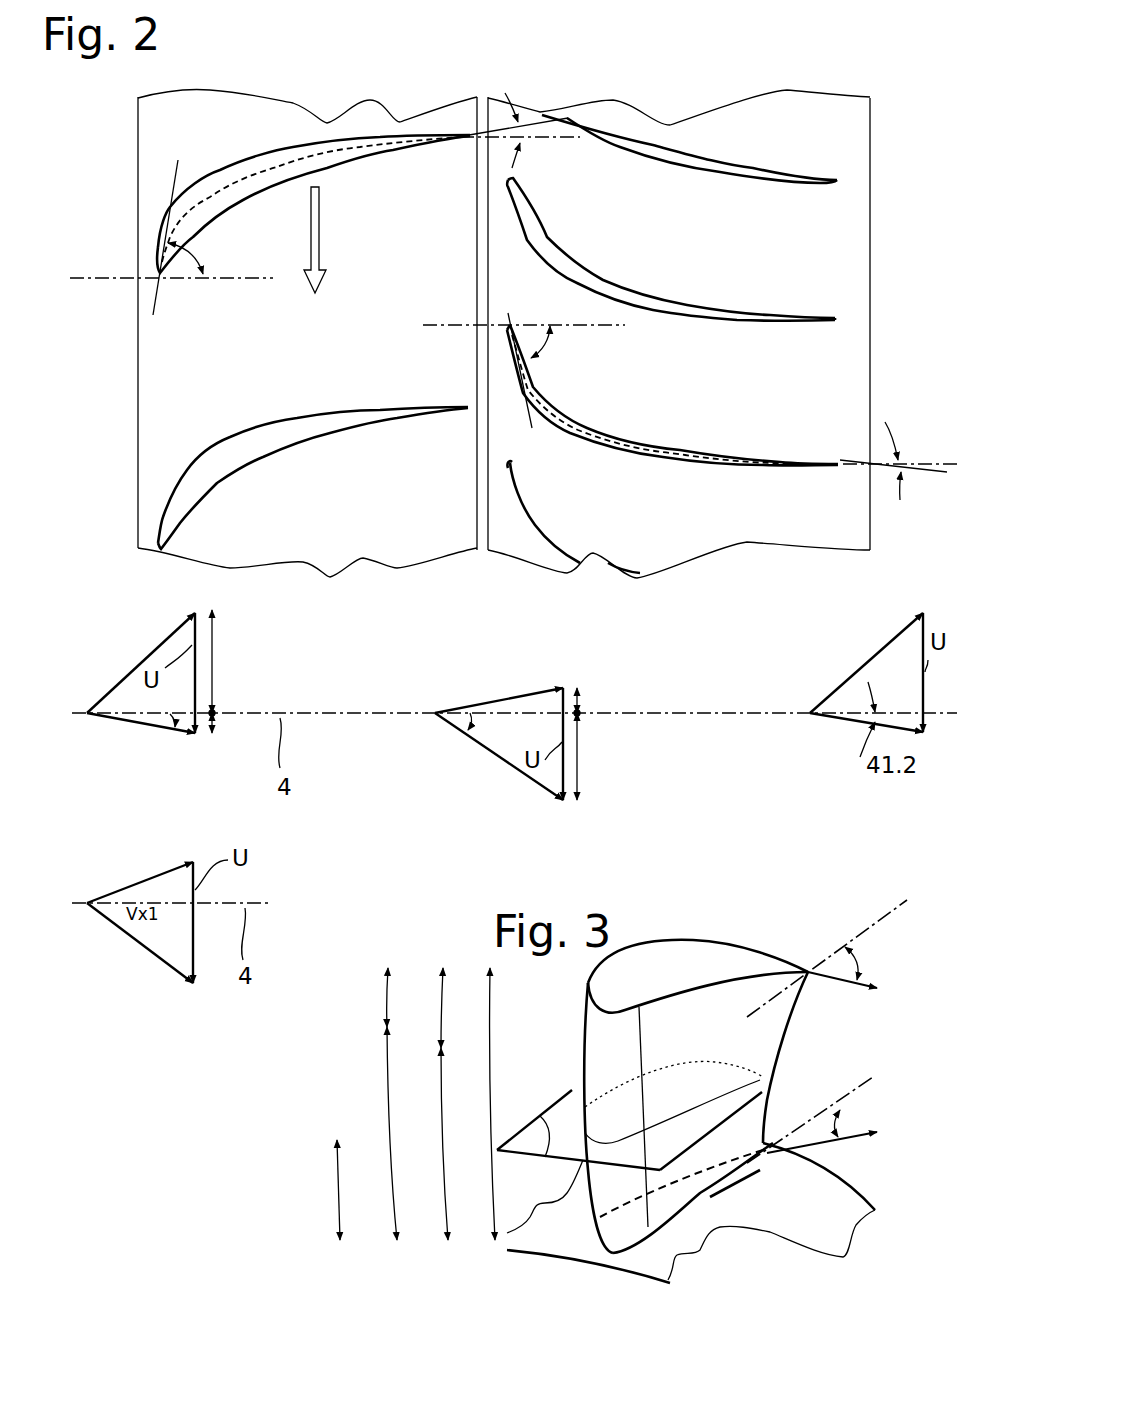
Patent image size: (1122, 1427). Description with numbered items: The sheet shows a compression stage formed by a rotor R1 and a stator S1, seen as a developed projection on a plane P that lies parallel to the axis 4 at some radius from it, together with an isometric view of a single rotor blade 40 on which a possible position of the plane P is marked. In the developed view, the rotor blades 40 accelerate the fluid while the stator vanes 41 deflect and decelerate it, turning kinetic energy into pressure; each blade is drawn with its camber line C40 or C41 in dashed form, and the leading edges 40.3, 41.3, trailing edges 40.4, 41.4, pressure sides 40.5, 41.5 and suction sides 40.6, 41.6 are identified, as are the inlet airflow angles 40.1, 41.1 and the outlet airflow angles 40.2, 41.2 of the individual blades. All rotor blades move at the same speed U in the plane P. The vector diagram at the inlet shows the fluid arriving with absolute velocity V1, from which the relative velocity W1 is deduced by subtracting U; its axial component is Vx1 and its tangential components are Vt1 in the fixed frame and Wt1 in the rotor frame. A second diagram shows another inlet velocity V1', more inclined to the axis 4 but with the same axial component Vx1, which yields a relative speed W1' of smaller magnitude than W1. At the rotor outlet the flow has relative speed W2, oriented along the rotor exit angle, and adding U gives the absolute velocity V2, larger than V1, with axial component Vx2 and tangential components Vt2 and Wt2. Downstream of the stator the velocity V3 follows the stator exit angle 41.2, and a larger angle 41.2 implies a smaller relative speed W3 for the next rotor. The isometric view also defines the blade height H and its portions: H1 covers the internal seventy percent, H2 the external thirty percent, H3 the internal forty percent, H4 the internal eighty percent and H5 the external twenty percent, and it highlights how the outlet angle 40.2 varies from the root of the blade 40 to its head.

In FIG. 2, the axis 4 is at (95, 282).
In FIG. 2, the rotor blade 40 is at (222, 162).
In FIG. 3, the rotor blade 40 is at (563, 1050).
In FIG. 2, the inlet airflow angle of rotor blade 40.1 is at (203, 237).
In FIG. 2, the outlet airflow angle of rotor blade 40.2 is at (510, 114).
In FIG. 3, the outlet airflow angle of rotor blade 40.2 is at (829, 1031).
In FIG. 2, the leading edge of rotor blade 40.3 is at (172, 547).
In FIG. 3, the leading edge of rotor blade 40.3 is at (587, 1218).
In FIG. 2, the trailing edge of rotor blade 40.4 is at (465, 412).
In FIG. 3, the trailing edge of rotor blade 40.4 is at (780, 1057).
In FIG. 2, the pressure side of rotor blade 40.5 is at (303, 446).
In FIG. 3, the pressure side of rotor blade 40.5 is at (718, 1040).
In FIG. 2, the suction side of rotor blade 40.6 is at (265, 428).
In FIG. 2, the camber line of rotor blade C40 is at (292, 158).
In FIG. 2, the stator vane 41 is at (728, 167).
In FIG. 2, the inlet airflow angle of stator vane 41.1 is at (552, 370).
In FIG. 2, the outlet angle of stator vane 41.2 is at (900, 442).
In FIG. 2, the leading edge of stator vane 41.3 is at (516, 178).
In FIG. 2, the trailing edge of stator vane 41.4 is at (836, 316).
In FIG. 2, the pressure side of stator vane 41.5 is at (698, 296).
In FIG. 2, the suction side of stator vane 41.6 is at (690, 322).
In FIG. 2, the camber line of stator vane C41 is at (690, 453).
In FIG. 2, the rotor R1 is at (320, 68).
In FIG. 2, the stator S1 is at (680, 68).
In FIG. 2, the rotational speed vector U is at (319, 222).
In FIG. 2, the relative inlet velocity W1 is at (141, 653).
In FIG. 2, the absolute inlet velocity V1 is at (141, 750).
In FIG. 2, the tangential relative inlet velocity Wt1 is at (239, 661).
In FIG. 2, the tangential absolute inlet velocity Vt1 is at (235, 728).
In FIG. 2, the axial inlet velocity Vx1 is at (155, 702).
In FIG. 2, the relative outlet velocity W2 is at (470, 700).
In FIG. 2, the absolute outlet velocity V2 is at (475, 745).
In FIG. 2, the tangential relative outlet velocity Wt2 is at (604, 697).
In FIG. 2, the tangential absolute outlet velocity Vt2 is at (602, 755).
In FIG. 2, the axial outlet velocity Vx2 is at (515, 723).
In FIG. 2, the relative velocity downstream of stator W3 is at (870, 657).
In FIG. 2, the absolute stator outlet velocity V3 is at (845, 722).
In FIG. 2, the alternative relative inlet velocity W1' is at (140, 861).
In FIG. 2, the alternative absolute inlet velocity V1' is at (140, 952).
In FIG. 3, the blade height H is at (480, 1104).
In FIG. 3, the internal 70% height portion H1 is at (430, 1144).
In FIG. 3, the external 30% height portion H2 is at (424, 1008).
In FIG. 3, the internal 40% height portion H3 is at (324, 1190).
In FIG. 3, the internal 80% height portion H4 is at (377, 1133).
In FIG. 3, the external 20% height portion H5 is at (370, 997).
In FIG. 3, the cross-section plane P is at (629, 1130).